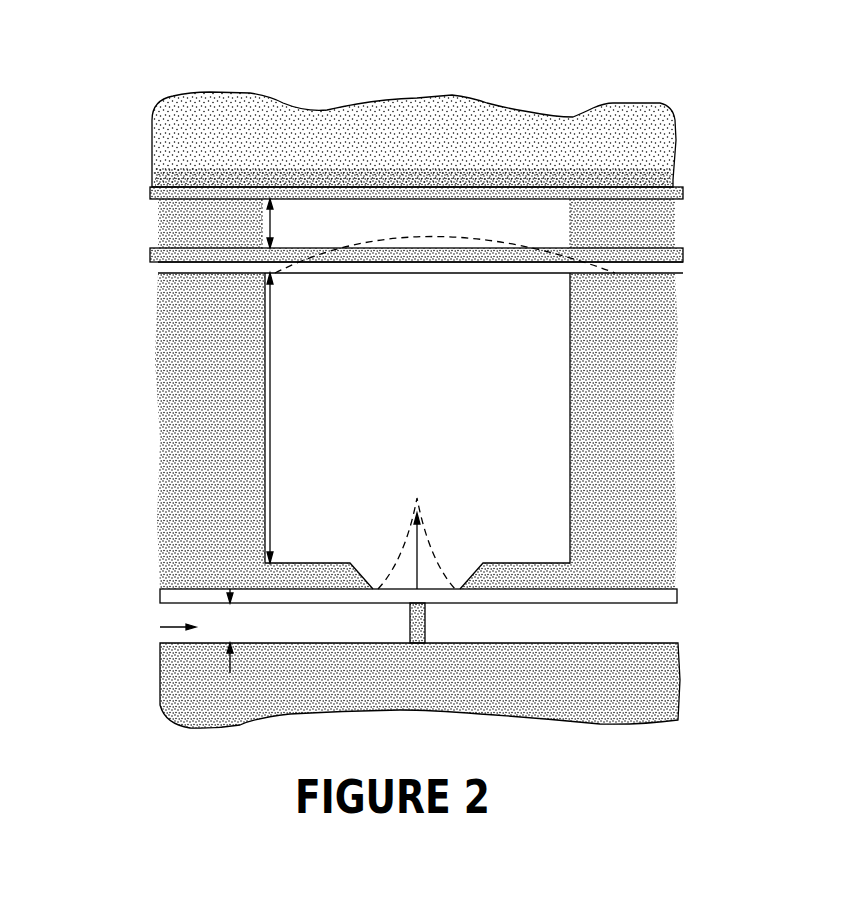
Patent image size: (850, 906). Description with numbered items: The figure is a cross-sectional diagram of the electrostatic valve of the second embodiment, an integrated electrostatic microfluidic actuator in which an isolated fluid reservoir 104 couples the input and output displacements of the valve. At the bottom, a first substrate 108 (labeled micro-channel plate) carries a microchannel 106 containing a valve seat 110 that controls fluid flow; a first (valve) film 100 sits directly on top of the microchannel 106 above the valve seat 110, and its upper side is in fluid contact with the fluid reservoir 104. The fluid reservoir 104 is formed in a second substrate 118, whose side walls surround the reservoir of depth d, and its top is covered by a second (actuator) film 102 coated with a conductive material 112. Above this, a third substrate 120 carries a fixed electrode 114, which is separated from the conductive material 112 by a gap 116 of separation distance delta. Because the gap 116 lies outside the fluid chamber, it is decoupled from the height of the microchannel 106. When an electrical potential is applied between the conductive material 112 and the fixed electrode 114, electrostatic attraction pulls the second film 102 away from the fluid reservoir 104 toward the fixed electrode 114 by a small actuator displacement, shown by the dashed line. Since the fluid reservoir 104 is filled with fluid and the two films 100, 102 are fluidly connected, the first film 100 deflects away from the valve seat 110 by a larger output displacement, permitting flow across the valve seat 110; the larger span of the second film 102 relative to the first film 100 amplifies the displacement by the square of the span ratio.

The first (valve) film 100 is at (660, 597).
The second (actuator) film 102 is at (640, 268).
The fluid reservoir 104 is at (473, 442).
The microchannel 106 is at (637, 622).
The first substrate 108 is at (183, 697).
The valve seat 110 is at (425, 624).
The conductive material 112 is at (633, 257).
The fixed electrode 114 is at (187, 197).
The gap 116 is at (343, 220).
The second substrate 118 is at (203, 453).
The third substrate 120 is at (572, 151).